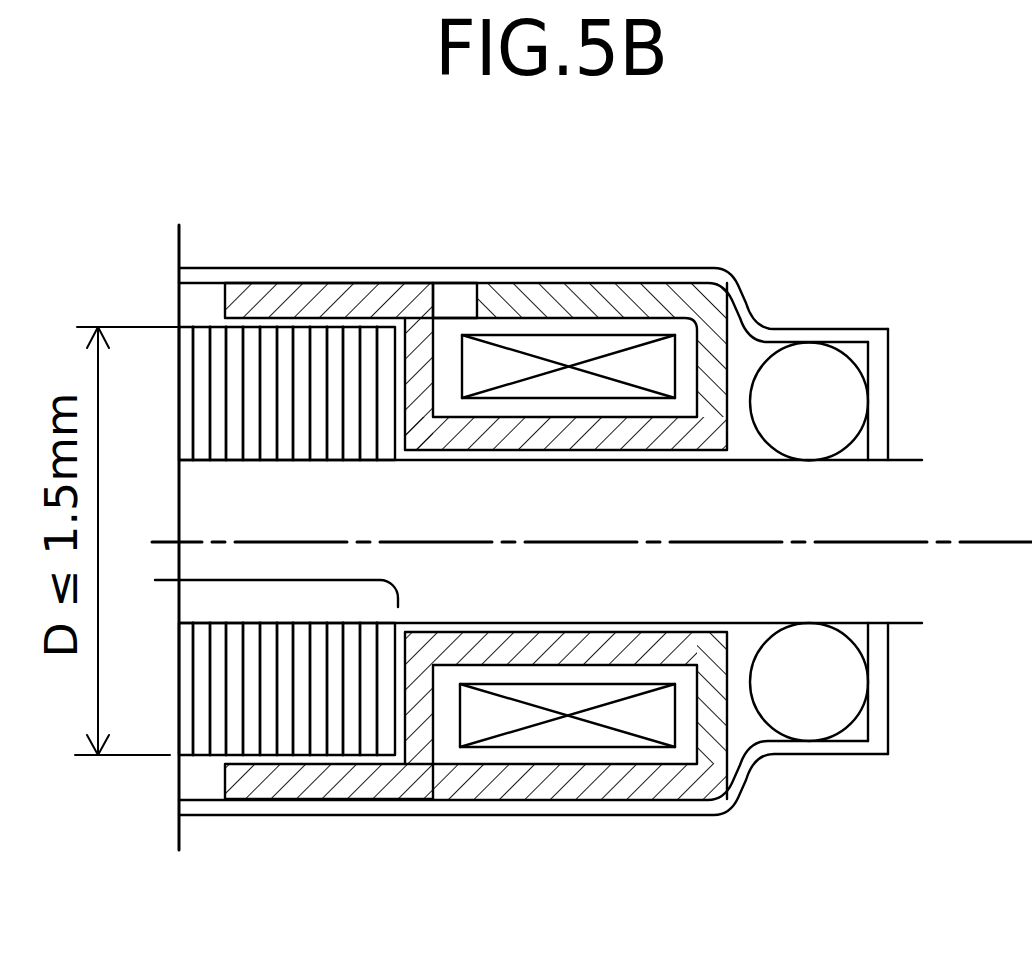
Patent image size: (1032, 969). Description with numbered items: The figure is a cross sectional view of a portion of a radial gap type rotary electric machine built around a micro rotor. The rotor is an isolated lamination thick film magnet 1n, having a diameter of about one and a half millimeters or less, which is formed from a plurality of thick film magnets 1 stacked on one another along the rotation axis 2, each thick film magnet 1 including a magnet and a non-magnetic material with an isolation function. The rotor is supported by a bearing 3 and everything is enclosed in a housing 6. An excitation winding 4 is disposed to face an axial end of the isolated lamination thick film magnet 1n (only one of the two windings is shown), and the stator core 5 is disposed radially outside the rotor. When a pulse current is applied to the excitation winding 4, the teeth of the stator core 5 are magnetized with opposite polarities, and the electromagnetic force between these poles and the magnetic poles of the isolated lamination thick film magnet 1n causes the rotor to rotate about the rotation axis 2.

The thick film magnet 1 is at (320, 688).
The isolated lamination thick film magnet 1n is at (262, 578).
The rotation axis 2 is at (888, 542).
The bearing 3 is at (803, 383).
The excitation winding 4 is at (565, 347).
The stator core 5 is at (707, 768).
The housing 6 is at (390, 279).